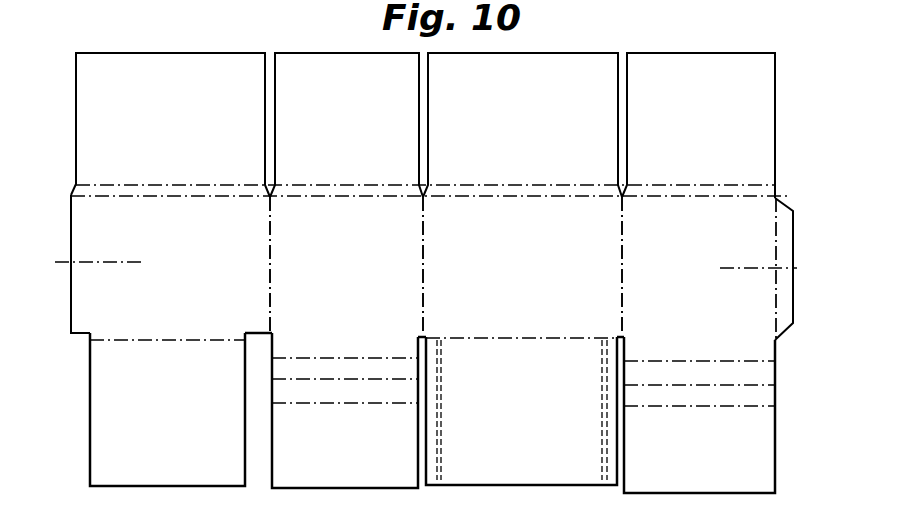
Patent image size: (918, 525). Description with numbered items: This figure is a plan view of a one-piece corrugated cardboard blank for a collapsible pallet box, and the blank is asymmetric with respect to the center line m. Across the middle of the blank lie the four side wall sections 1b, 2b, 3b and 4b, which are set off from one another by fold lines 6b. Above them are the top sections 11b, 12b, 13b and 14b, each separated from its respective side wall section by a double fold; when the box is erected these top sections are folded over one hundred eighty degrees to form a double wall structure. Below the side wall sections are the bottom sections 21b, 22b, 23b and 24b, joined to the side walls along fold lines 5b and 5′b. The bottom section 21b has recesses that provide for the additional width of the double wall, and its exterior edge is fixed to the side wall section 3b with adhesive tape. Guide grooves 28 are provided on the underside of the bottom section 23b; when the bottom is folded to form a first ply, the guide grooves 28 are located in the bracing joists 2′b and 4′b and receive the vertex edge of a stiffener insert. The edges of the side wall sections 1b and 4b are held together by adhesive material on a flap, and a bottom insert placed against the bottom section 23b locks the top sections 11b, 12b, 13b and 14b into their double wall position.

The top section 11b is at (193, 122).
The top section 12b is at (371, 122).
The top section 13b is at (539, 132).
The top section 14b is at (714, 128).
The side wall section 1b is at (187, 270).
The side wall section 2b is at (355, 275).
The side wall section 3b is at (530, 275).
The side wall section 4b is at (713, 280).
The bottom section 21b is at (181, 425).
The bottom section 22b is at (361, 450).
The bottom section 23b is at (537, 447).
The bottom section 24b is at (706, 455).
The fold line 5b is at (147, 340).
The fold line 5′b is at (298, 404).
The vertical fold line 6b is at (270, 261).
The bracing joist 2′b is at (407, 392).
The bracing joist 4′b is at (640, 395).
The guide grooves 28 is at (440, 447).
The center line m is at (426, 257).